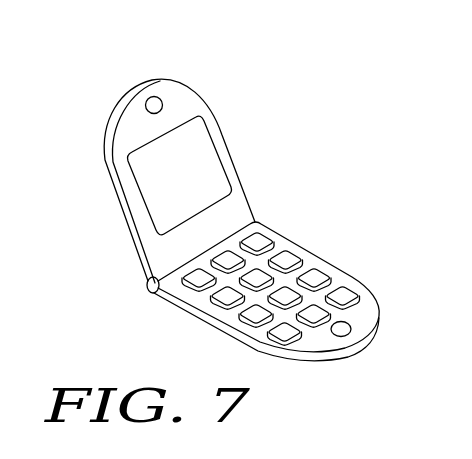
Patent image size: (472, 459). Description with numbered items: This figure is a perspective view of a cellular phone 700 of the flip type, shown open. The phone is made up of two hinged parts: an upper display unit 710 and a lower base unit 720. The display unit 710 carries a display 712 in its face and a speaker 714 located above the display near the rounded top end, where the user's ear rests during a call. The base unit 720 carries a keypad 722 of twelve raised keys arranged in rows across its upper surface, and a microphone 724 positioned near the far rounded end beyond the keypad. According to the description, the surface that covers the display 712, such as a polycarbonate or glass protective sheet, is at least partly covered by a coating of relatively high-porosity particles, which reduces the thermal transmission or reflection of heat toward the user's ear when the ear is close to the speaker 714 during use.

The cellular phone 700 is at (119, 55).
The display unit 710 is at (180, 162).
The display 712 is at (197, 186).
The speaker 714 is at (158, 97).
The base unit 720 is at (277, 302).
The keypad 722 is at (258, 226).
The microphone 724 is at (350, 335).